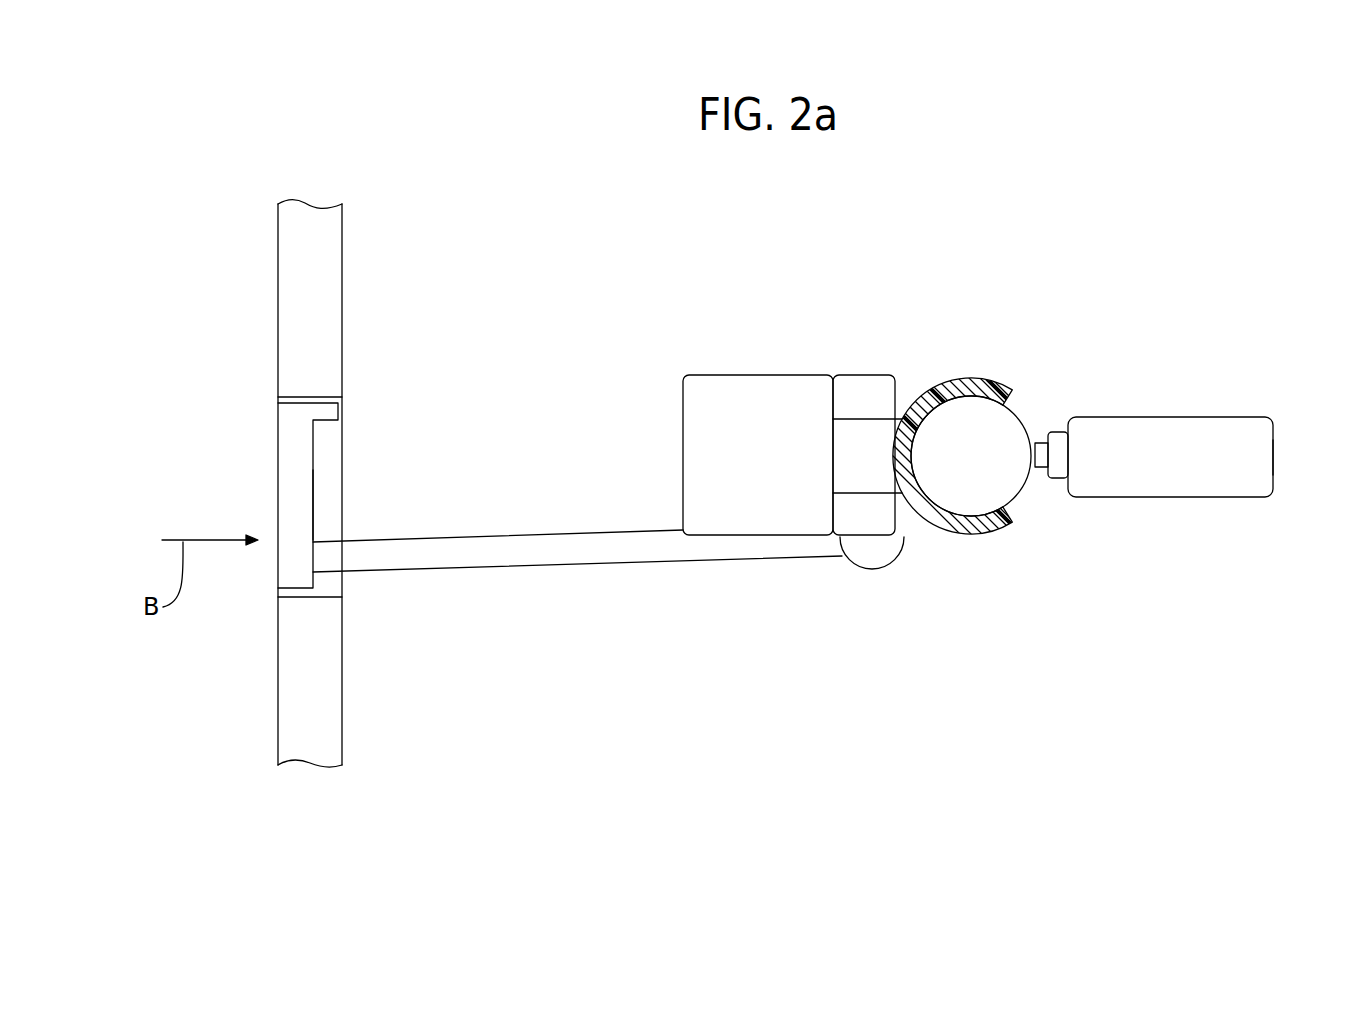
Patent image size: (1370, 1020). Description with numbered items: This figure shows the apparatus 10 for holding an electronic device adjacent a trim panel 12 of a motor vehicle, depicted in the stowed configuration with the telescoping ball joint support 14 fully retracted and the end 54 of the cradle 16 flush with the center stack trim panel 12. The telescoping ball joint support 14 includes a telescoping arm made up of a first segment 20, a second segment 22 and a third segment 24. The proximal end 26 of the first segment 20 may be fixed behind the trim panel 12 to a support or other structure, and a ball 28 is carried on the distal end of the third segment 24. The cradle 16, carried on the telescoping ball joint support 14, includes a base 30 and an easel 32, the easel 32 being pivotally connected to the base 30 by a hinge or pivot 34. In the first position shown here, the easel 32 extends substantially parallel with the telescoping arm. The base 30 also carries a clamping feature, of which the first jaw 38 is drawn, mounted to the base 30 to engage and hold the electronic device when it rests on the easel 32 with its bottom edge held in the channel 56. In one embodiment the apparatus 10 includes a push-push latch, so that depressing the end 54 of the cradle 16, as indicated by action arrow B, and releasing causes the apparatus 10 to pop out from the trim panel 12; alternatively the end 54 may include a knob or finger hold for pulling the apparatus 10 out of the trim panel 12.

The apparatus 10 is at (1109, 227).
The trim panel 12 is at (277, 305).
The telescoping ball joint support 14 is at (1054, 368).
The cradle 16 is at (566, 390).
The first segment 20 is at (1163, 487).
The second segment 22 is at (1060, 480).
The third segment 24 is at (1038, 512).
The proximal end 26 is at (1274, 467).
The ball 28 is at (985, 440).
The base 30 is at (865, 387).
The easel 32 is at (528, 556).
The pivot 34 is at (870, 558).
The first jaw 38 is at (750, 375).
The end of the cradle 54 is at (290, 460).
The channel 56 is at (316, 489).